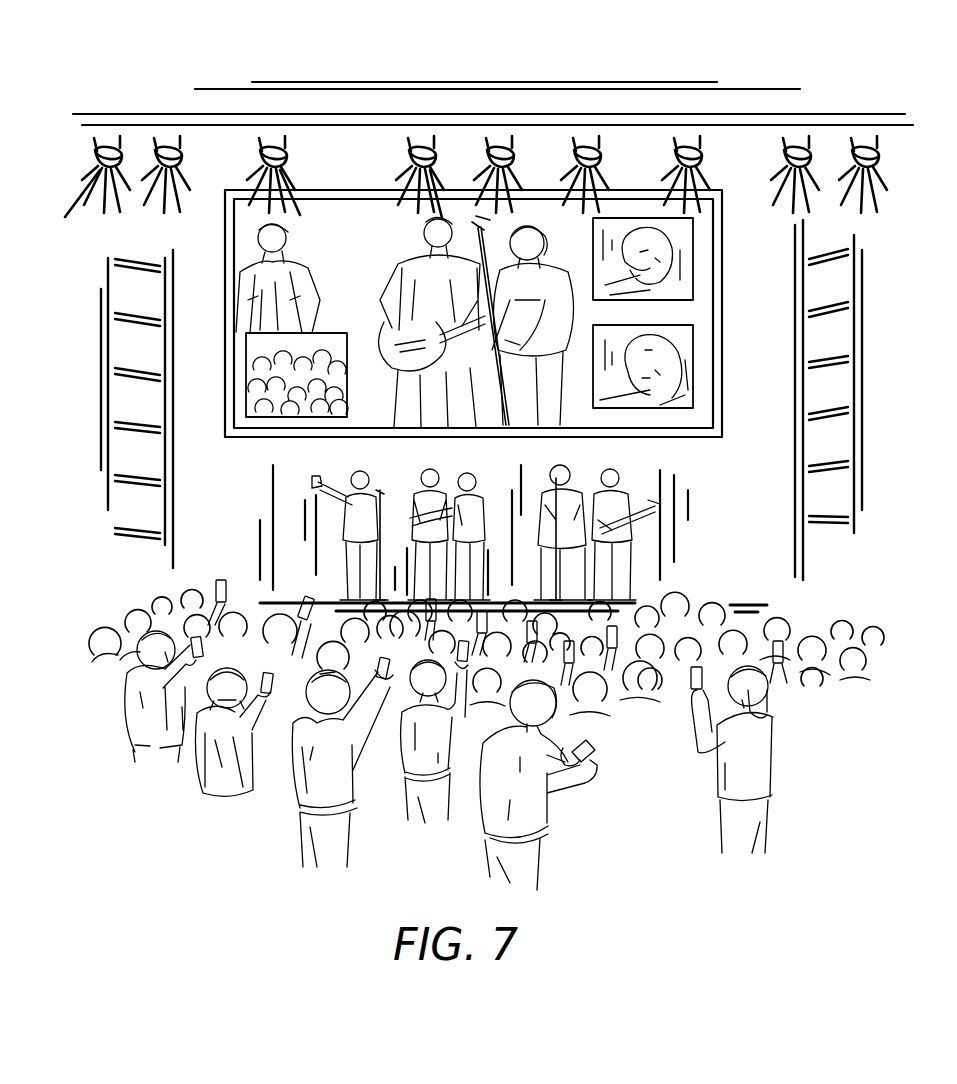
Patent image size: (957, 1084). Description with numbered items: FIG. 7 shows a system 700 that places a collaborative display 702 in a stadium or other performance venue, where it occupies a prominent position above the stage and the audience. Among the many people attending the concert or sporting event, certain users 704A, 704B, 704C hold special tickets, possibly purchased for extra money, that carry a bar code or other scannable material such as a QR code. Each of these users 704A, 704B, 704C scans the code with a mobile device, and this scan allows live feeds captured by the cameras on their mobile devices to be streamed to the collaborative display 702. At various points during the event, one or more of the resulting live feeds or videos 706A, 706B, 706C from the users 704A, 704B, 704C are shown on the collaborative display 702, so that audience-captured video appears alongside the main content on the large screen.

The system 700 is at (880, 76).
The collaborative display 702 is at (328, 190).
The user 704A is at (548, 835).
The user 704B is at (778, 725).
The user 704C is at (300, 792).
The live feed 706A is at (698, 345).
The live feed 706B is at (698, 250).
The live feed 706C is at (310, 314).